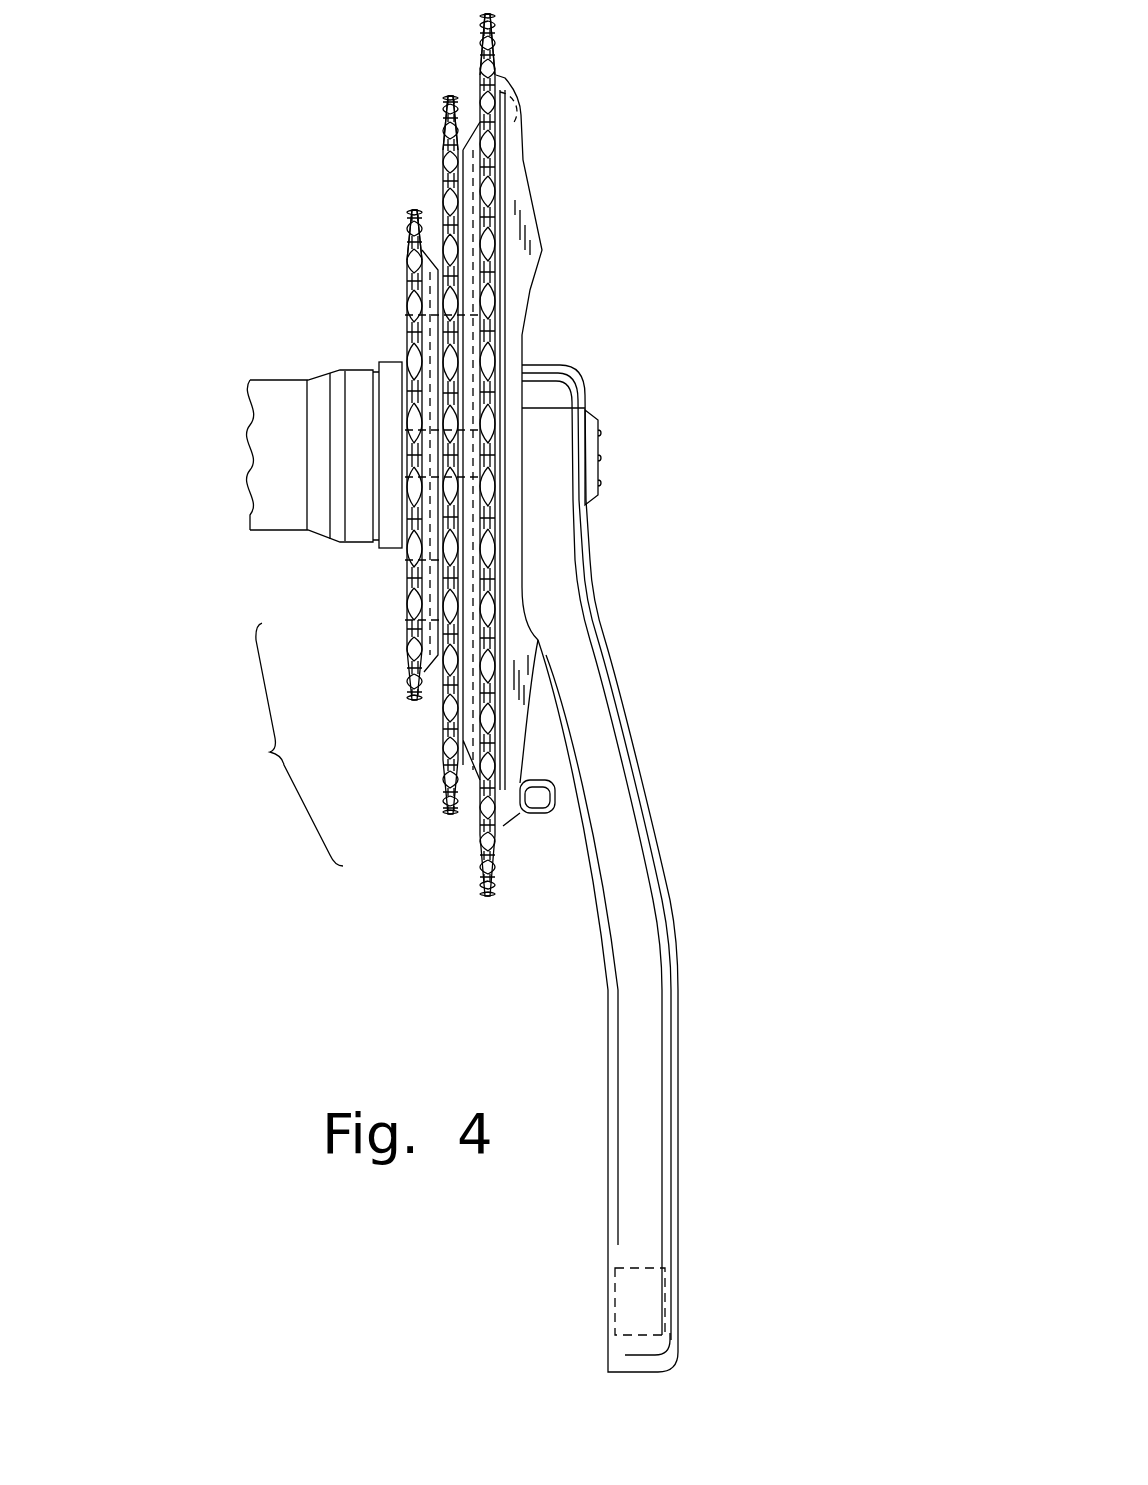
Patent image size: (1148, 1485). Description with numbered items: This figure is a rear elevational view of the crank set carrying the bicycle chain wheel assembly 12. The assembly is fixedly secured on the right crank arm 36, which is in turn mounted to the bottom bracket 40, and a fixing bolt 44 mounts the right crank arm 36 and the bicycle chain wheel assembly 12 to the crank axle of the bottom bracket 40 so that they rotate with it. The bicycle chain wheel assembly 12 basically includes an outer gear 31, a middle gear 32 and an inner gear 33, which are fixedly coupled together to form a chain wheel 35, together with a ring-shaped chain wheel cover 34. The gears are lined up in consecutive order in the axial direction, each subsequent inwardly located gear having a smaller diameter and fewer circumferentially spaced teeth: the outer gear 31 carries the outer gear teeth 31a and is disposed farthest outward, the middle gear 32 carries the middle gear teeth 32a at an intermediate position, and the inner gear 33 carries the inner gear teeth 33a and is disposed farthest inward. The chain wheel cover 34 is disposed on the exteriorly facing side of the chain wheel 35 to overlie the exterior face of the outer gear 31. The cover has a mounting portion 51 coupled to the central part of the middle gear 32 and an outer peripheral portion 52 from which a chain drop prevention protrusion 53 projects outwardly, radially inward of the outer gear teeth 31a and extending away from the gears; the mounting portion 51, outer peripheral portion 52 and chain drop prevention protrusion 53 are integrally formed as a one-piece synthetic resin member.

The bicycle chain wheel assembly 12 is at (648, 240).
The outer gear 31 is at (480, 858).
The outer gear teeth 31a is at (483, 52).
The middle gear 32 is at (445, 770).
The middle gear teeth 32a is at (448, 146).
The inner gear 33 is at (410, 680).
The inner gear teeth 33a is at (412, 258).
The chain wheel cover 34 is at (508, 635).
The chain wheel 35 is at (363, 455).
The right crank arm 36 is at (678, 1017).
The bottom bracket 40 is at (288, 348).
The fixing bolt 44 is at (600, 470).
The mounting portion 51 is at (585, 398).
The outer peripheral portion 52 is at (528, 743).
The chain drop prevention protrusion 53 is at (527, 815).